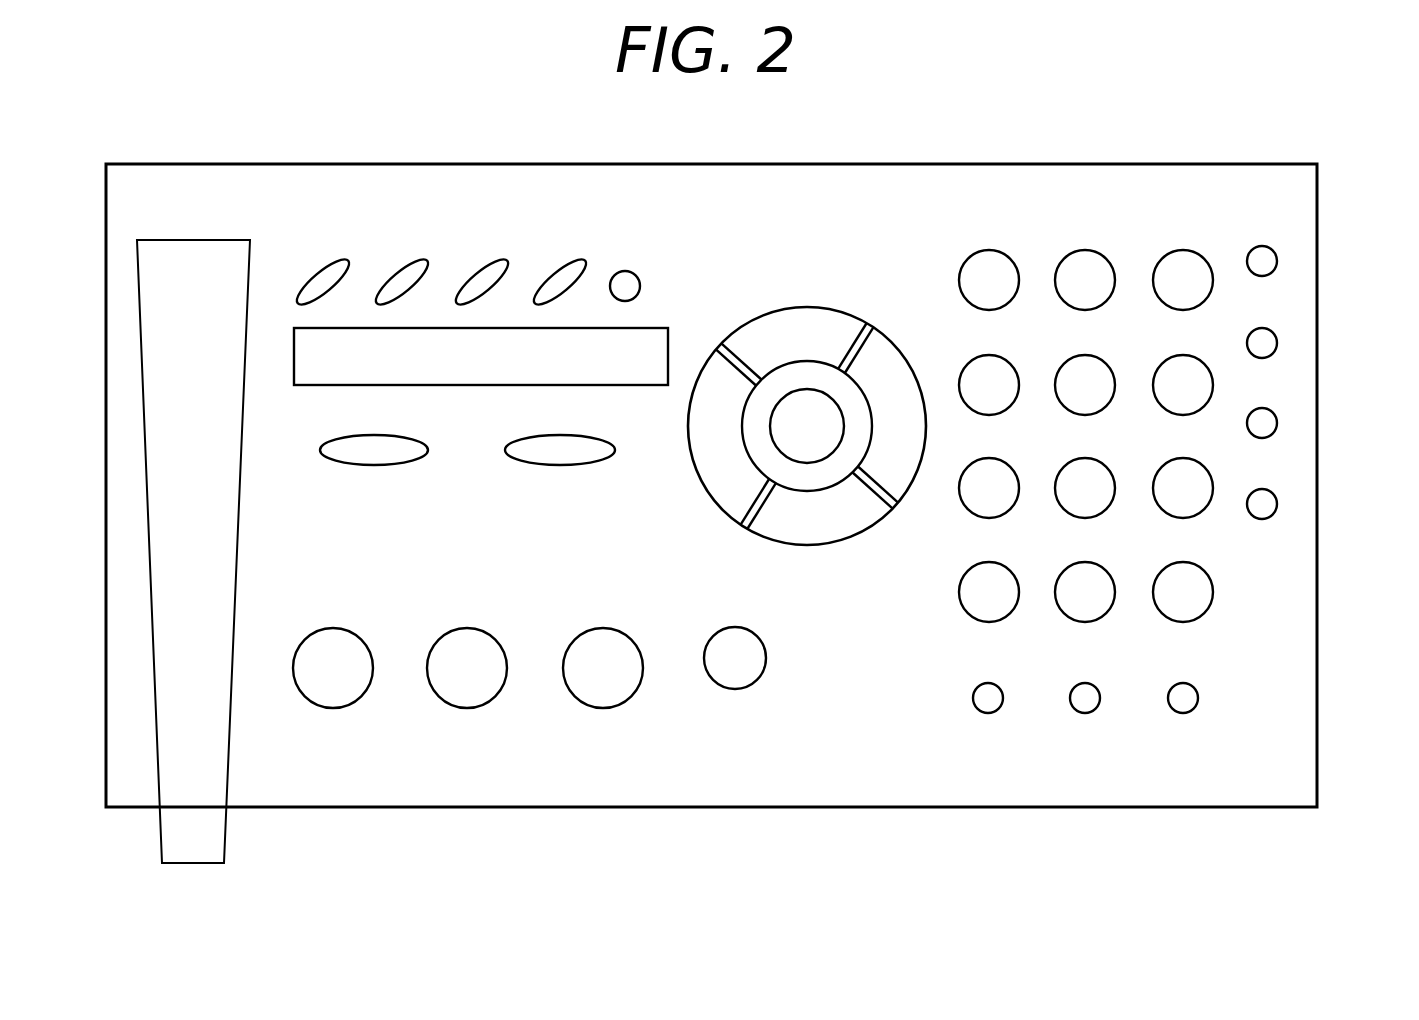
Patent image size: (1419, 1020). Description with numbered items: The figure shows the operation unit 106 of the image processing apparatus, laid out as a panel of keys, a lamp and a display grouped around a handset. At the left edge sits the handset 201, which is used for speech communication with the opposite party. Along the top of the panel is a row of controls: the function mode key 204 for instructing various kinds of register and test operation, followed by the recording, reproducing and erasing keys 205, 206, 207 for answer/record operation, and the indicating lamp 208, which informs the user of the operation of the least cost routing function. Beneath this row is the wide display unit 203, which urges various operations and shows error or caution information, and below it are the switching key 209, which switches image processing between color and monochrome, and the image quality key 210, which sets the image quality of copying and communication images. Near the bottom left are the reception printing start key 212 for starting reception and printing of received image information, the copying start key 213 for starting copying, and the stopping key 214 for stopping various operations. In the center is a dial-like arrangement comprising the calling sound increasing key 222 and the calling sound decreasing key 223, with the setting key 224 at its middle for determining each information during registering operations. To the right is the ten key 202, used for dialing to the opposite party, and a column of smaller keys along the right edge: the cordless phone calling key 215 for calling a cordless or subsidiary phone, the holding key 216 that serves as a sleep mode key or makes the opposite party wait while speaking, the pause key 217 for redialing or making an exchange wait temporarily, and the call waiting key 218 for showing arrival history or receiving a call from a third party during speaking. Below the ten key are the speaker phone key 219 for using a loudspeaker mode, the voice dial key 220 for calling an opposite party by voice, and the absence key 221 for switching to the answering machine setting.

The operation unit 106 is at (907, 131).
The handset 201 is at (205, 240).
The ten key 202 is at (1098, 252).
The display unit 203 is at (643, 328).
The function mode key 204 is at (335, 272).
The recording, reproducing and erasing key 205 is at (415, 272).
The recording, reproducing and erasing key 206 is at (493, 272).
The recording, reproducing and erasing key 207 is at (573, 272).
The α5-indicating lamp 208 is at (627, 272).
The switching key 209 is at (355, 465).
The image quality key 210 is at (540, 465).
The reception printing start key 212 is at (457, 708).
The copying start key 213 is at (593, 708).
The stopping key 214 is at (728, 689).
The cordless phone calling key 215 is at (1278, 259).
The holding key 216 is at (1278, 341).
The pause key 217 is at (1278, 421).
The call waiting key 218 is at (1278, 502).
The speaker phone key 219 is at (985, 713).
The voice dial key 220 is at (1080, 713).
The absence key 221 is at (322, 708).
The calling sound increasing key 222 is at (830, 307).
The calling sound decreasing key 223 is at (812, 545).
The setting key 224 is at (790, 432).